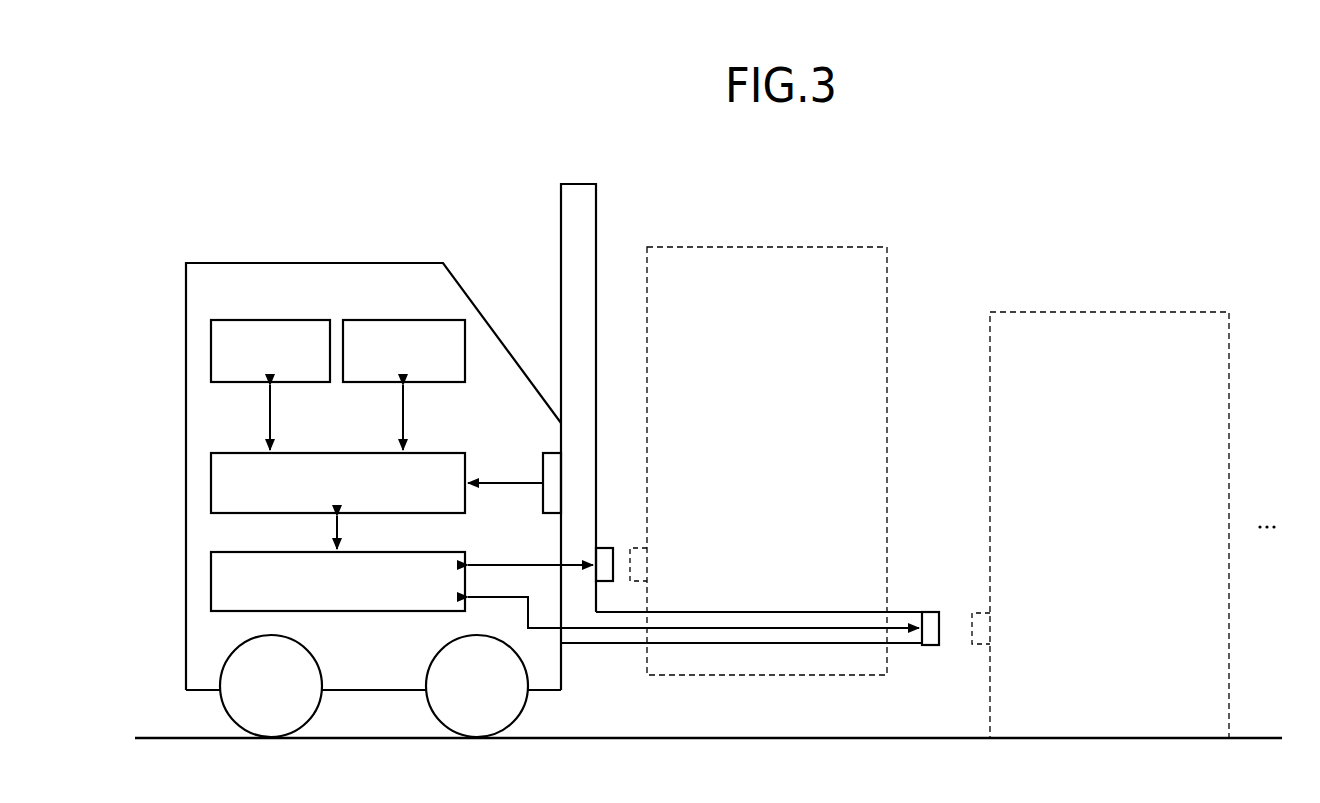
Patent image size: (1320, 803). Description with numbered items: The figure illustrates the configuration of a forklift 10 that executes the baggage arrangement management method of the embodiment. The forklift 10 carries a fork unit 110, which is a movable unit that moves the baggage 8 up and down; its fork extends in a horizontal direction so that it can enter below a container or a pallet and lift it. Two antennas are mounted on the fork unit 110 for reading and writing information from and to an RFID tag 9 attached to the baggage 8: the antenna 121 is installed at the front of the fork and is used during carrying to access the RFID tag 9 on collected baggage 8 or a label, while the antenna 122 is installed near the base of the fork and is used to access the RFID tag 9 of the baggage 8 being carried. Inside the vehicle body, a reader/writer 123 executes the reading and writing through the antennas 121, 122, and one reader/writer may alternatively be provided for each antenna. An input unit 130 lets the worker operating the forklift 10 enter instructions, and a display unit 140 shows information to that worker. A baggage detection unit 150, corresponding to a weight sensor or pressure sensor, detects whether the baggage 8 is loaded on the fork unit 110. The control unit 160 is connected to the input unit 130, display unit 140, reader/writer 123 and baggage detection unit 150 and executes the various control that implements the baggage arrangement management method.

The forklift 10 is at (337, 263).
The fork unit 110 is at (572, 184).
The antenna 121 is at (931, 612).
The antenna 122 is at (603, 548).
The reader/writer 123 is at (428, 552).
The input unit 130 is at (268, 320).
The display unit 140 is at (398, 320).
The baggage detection unit 150 is at (548, 453).
The control unit 160 is at (428, 453).
The baggage 8 is at (765, 247).
The RFID tag 9 is at (645, 548).